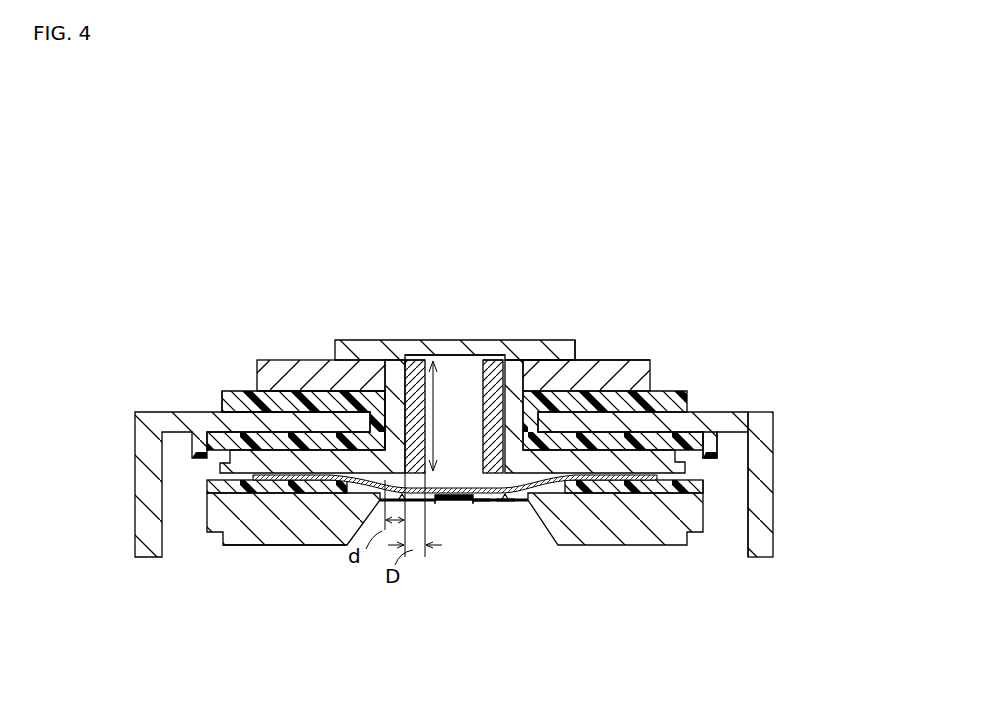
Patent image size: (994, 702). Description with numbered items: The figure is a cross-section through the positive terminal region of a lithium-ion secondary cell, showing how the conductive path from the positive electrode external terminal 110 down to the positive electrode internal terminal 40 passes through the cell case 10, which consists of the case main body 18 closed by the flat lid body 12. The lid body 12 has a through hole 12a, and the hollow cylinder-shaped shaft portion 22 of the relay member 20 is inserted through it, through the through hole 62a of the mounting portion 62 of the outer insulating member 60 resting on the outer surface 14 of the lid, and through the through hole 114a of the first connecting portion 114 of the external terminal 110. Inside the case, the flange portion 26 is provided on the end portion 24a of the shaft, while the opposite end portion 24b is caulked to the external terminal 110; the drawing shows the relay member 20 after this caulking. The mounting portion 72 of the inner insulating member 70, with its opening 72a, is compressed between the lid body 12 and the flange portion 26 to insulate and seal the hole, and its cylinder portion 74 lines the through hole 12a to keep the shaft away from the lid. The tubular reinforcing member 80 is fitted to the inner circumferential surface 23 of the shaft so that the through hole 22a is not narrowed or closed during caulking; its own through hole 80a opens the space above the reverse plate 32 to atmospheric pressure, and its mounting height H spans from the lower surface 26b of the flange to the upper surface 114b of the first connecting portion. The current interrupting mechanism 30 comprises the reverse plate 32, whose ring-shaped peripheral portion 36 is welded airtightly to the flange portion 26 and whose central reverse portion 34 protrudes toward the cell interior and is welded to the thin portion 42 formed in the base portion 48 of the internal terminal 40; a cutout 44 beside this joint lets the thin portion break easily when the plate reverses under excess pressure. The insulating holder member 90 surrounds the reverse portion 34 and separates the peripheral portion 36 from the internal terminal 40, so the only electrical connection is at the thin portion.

The cell case 10 is at (777, 532).
The lid body 12 is at (735, 412).
The through hole 12a is at (318, 410).
The outer surface 14 is at (218, 396).
The case main body 18 is at (776, 492).
The relay member 20 is at (550, 336).
The shaft portion 22 is at (473, 397).
The through hole 22a is at (412, 362).
The inner circumferential surface 23 is at (455, 397).
The end portion 24a is at (512, 502).
The end portion 24b is at (577, 347).
The flange portion 26 is at (610, 470).
The lower surface 26b is at (560, 500).
The current interrupting mechanism 30 is at (463, 507).
The reverse plate 32 is at (448, 498).
The reverse portion 34 is at (462, 488).
The peripheral portion 36 is at (655, 494).
The positive electrode internal terminal 40 is at (248, 547).
The thin portion 42 is at (482, 502).
The cutout 44 is at (504, 502).
The base portion 48 is at (290, 541).
The outer insulating member 60 is at (212, 392).
The mounting portion 62 is at (277, 378).
The through hole 62a is at (362, 393).
The inner insulating member 70 is at (720, 442).
The mounting portion 72 is at (690, 400).
The opening 72a is at (393, 400).
The cylinder portion 74 is at (653, 388).
The reinforcing member 80 is at (505, 385).
The through hole 80a is at (493, 361).
The holder member 90 is at (703, 490).
The positive electrode external terminal 110 is at (650, 359).
The first connecting portion 114 is at (596, 359).
The through hole 114a is at (512, 343).
The upper surface 114b is at (556, 341).